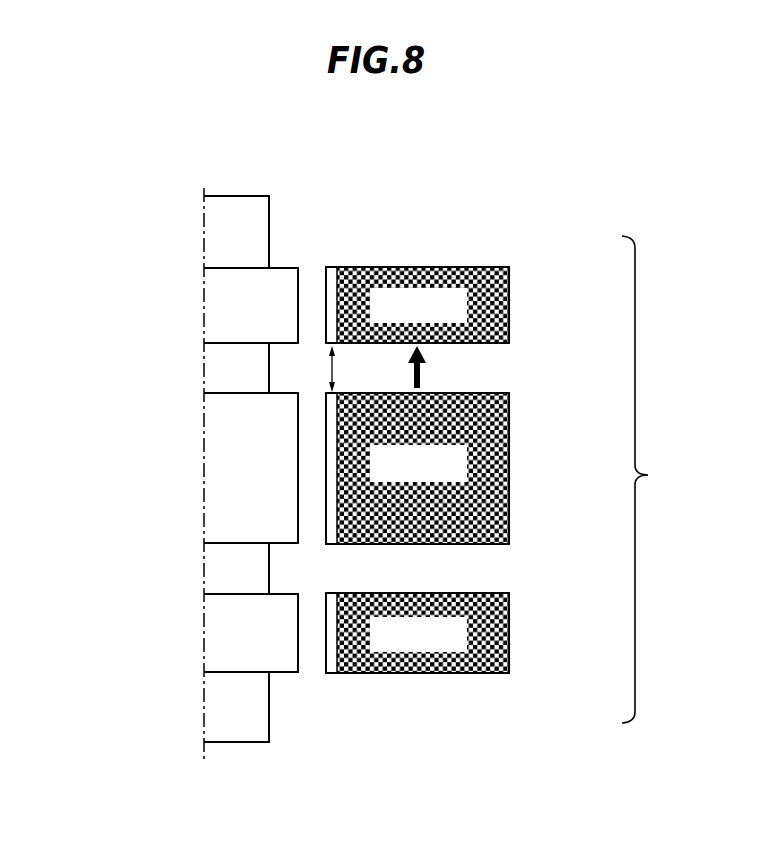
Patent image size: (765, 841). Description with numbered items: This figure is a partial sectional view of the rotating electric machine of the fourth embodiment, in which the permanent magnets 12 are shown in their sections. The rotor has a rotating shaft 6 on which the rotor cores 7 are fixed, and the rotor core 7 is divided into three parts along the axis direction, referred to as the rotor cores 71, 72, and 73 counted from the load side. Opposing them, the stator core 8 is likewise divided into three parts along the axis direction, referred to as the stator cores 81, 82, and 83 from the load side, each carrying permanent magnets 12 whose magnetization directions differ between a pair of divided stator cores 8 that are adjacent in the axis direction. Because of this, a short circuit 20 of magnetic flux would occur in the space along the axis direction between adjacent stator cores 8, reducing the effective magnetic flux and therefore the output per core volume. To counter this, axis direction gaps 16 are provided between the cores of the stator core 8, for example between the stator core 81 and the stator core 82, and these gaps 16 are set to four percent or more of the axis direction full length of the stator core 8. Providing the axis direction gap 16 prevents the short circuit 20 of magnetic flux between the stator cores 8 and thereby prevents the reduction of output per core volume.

The rotating shaft 6 is at (222, 203).
The rotor core 7 is at (112, 236).
The rotor core 71 is at (212, 305).
The rotor core 72 is at (213, 468).
The rotor core 73 is at (213, 632).
The stator core 8 is at (684, 488).
The stator core 81 is at (509, 283).
The stator core 82 is at (509, 457).
The stator core 83 is at (509, 632).
The permanent magnet 12 is at (509, 320).
The axis direction gap 16 is at (322, 348).
The short circuit of magnetic flux 20 is at (424, 367).